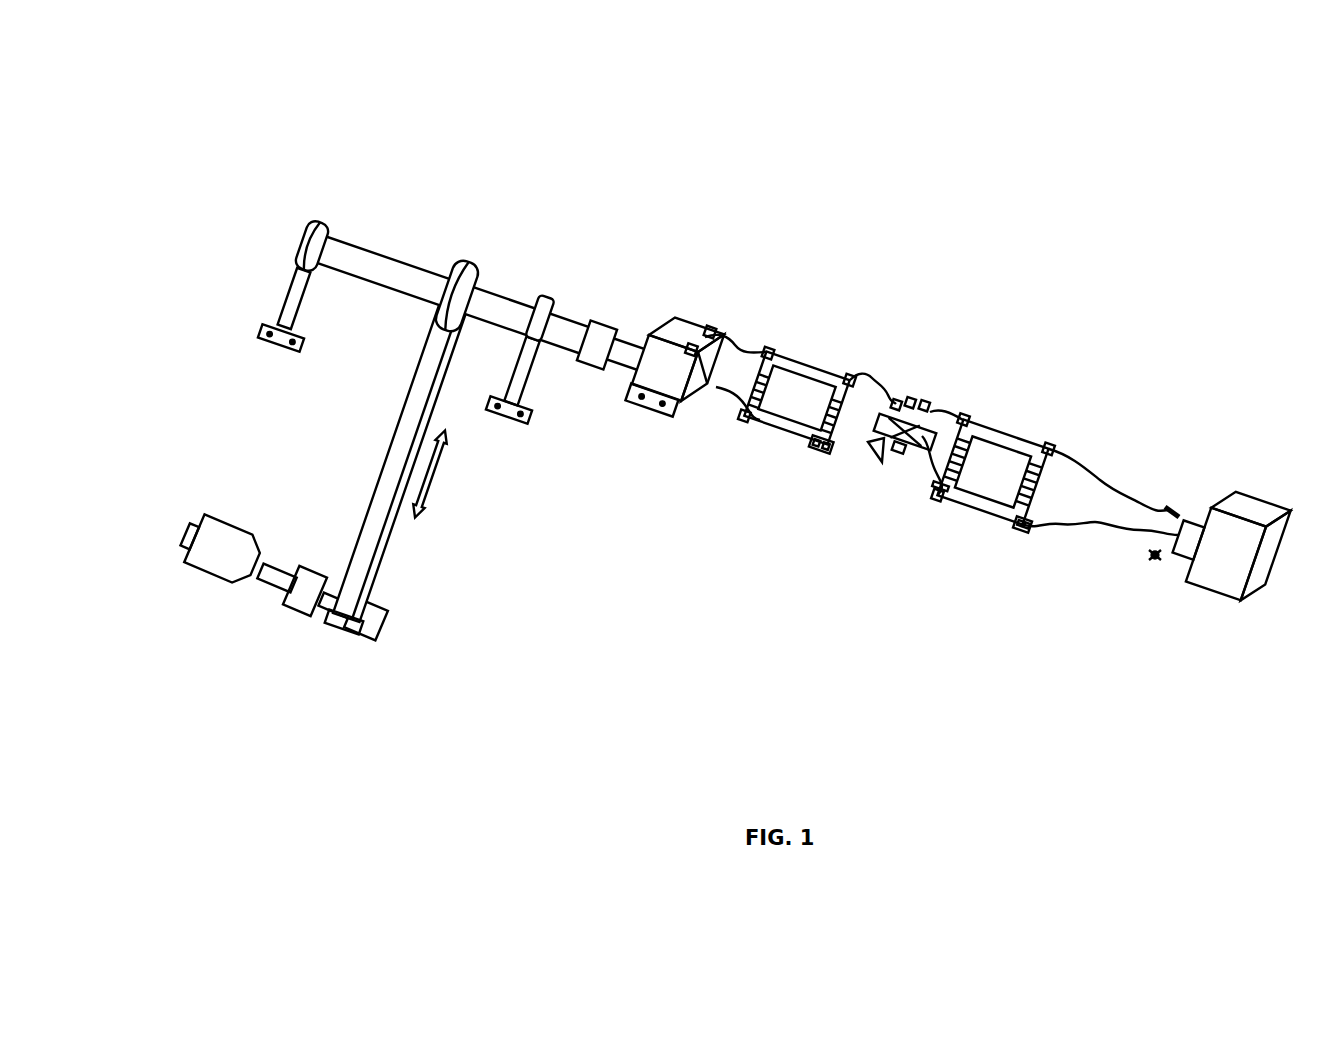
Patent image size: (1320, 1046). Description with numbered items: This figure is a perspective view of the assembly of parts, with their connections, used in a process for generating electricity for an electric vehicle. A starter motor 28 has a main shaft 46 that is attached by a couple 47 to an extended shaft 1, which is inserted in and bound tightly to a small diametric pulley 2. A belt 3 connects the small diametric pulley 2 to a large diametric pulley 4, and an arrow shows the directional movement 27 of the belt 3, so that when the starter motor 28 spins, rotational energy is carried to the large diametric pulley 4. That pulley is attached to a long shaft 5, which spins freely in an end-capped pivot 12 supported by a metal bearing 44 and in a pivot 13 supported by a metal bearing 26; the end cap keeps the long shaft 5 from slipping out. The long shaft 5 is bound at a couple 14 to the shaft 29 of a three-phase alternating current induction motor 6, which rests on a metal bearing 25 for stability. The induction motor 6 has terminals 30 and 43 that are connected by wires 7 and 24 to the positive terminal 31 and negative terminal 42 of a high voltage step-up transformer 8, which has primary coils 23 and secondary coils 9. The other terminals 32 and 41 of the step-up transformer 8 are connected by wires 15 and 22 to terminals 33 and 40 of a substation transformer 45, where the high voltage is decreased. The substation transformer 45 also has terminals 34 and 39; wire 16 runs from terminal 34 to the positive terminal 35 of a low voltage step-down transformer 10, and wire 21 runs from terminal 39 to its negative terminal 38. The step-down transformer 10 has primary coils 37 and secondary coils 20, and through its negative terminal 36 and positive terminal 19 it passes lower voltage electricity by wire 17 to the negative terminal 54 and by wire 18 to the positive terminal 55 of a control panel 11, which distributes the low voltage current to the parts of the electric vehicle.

The extended shaft 1 is at (368, 624).
The small diametric pulley 2 is at (352, 630).
The belt 3 is at (383, 472).
The large diametric pulley 4 is at (483, 282).
The long shaft 5 is at (392, 267).
The 3-phase alternating current induction motor 6 is at (675, 323).
The wire 7 is at (748, 333).
The high voltage step-up transformer 8 is at (812, 360).
The secondary coils of the high voltage step-up transformer 9 is at (805, 415).
The low voltage step-down transformer 10 is at (1008, 430).
The control panel 11 is at (1247, 488).
The end-capped pivot 12 is at (315, 227).
The pivot 13 is at (547, 297).
The couple 14 is at (597, 318).
The wire 15 is at (870, 372).
The wire 16 is at (942, 407).
The wire 17 is at (1120, 488).
The wire 18 is at (1103, 532).
The positive terminal of the low voltage step-down transformer 19 is at (1020, 537).
The secondary coils of the low voltage step-down transformer 20 is at (965, 510).
The wire 21 is at (920, 463).
The wire 22 is at (850, 385).
The primary coils of the high voltage step-up transformer 23 is at (758, 417).
The wire 24 is at (733, 387).
The metal bearing 25 is at (642, 417).
The metal bearing 26 is at (533, 385).
The directional movement of the belt 27 is at (430, 478).
The starter motor 28 is at (217, 570).
The shaft of the 3-phase alternating current induction motor 29 is at (630, 346).
The terminal of the 3-phase alternating current induction motor 30 is at (715, 328).
The positive terminal of the high voltage step-up transformer 31 is at (785, 350).
The negative terminal of the high voltage step-up transformer 32 is at (853, 368).
The terminal of the substation transformer 33 is at (898, 400).
The terminal of the substation transformer 34 is at (925, 405).
The positive terminal of the low voltage step-down transformer 35 is at (965, 420).
The negative terminal of the low voltage step-down transformer 36 is at (1055, 448).
The primary coils of the low voltage step-down transformer 37 is at (1035, 485).
The negative terminal of the low voltage step-down transformer 38 is at (940, 505).
The terminal of the substation transformer 39 is at (897, 413).
The terminal of the substation transformer 40 is at (873, 422).
The positive terminal of the high voltage step-up transformer 41 is at (810, 432).
The negative terminal of the high voltage step-up transformer 42 is at (740, 418).
The terminal of the 3-phase alternating current induction motor 43 is at (672, 405).
The metal bearing 44 is at (287, 305).
The substation transformer 45 is at (912, 402).
The main shaft 46 is at (275, 583).
The couple 47 is at (300, 608).
The negative terminal of the control panel 54 is at (1177, 503).
The positive terminal of the control panel 55 is at (1159, 560).